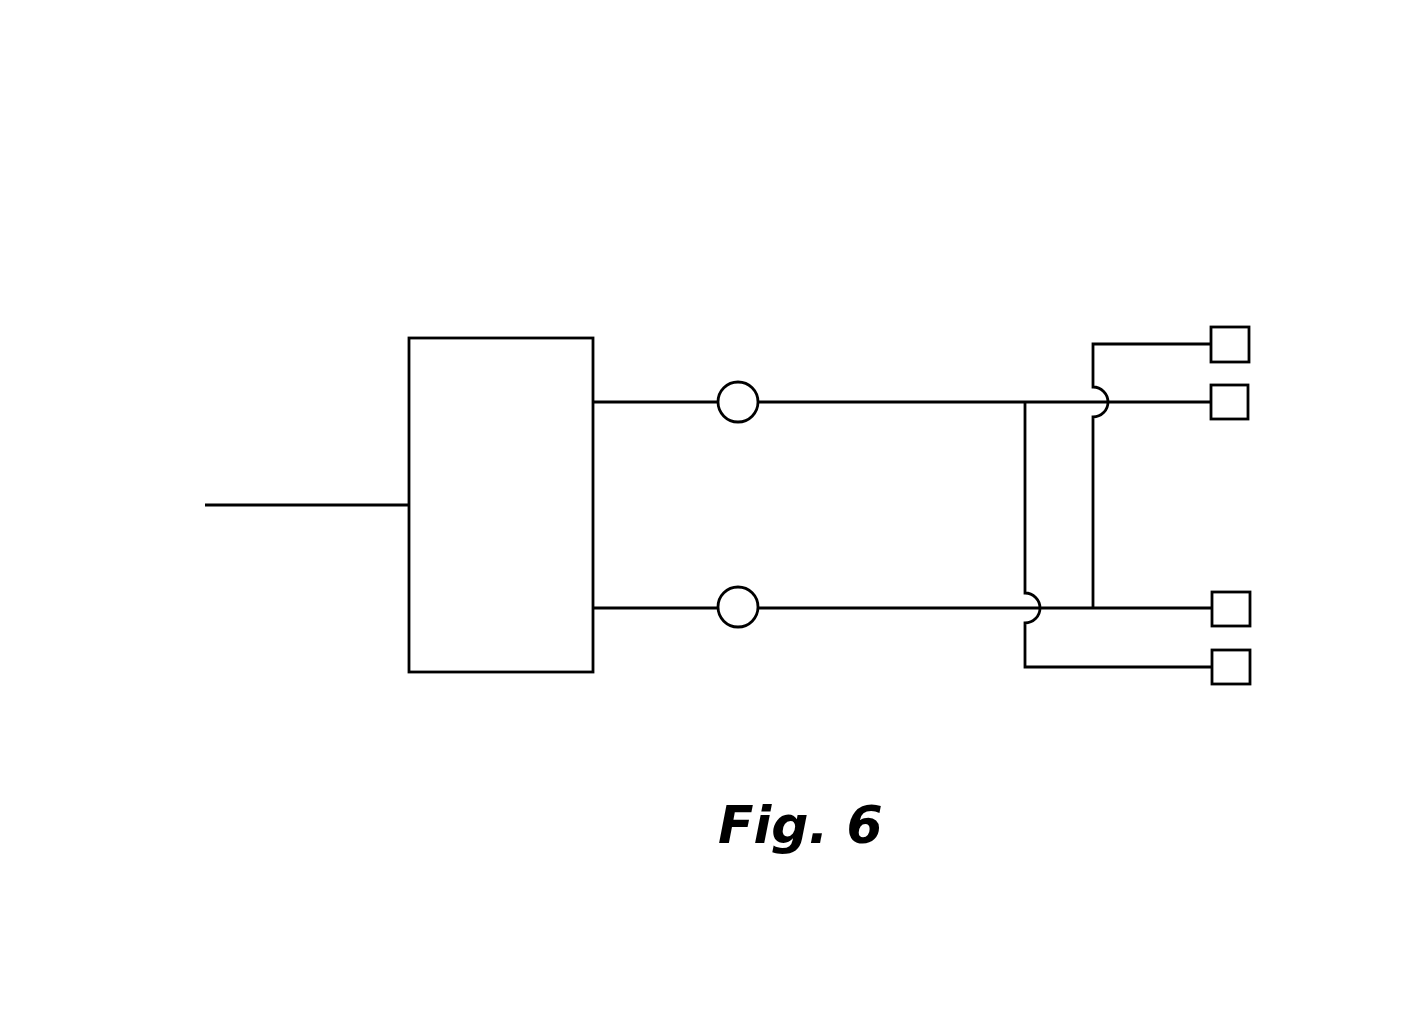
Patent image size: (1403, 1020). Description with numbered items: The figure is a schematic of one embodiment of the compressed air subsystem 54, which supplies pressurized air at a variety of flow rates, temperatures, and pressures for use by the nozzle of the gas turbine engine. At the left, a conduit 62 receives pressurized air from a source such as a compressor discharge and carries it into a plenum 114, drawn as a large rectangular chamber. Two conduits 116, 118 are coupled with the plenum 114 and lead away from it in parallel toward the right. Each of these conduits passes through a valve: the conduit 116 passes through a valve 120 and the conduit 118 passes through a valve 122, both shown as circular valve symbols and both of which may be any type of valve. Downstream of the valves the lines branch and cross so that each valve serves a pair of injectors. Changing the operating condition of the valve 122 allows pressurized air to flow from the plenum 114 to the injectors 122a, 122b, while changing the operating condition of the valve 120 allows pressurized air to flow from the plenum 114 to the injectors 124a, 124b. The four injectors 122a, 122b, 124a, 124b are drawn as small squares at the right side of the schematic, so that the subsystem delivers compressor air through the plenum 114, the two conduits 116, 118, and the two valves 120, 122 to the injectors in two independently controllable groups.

The compressed air subsystem 54 is at (676, 172).
The conduit 62 is at (251, 505).
The plenum 114 is at (478, 338).
The conduit 116 is at (650, 400).
The conduit 118 is at (633, 610).
The valve 120 is at (740, 383).
The valve 122 is at (752, 626).
The injector 122a is at (1250, 604).
The injector 122b is at (1223, 327).
The injector 124a is at (1248, 402).
The injector 124b is at (1228, 684).